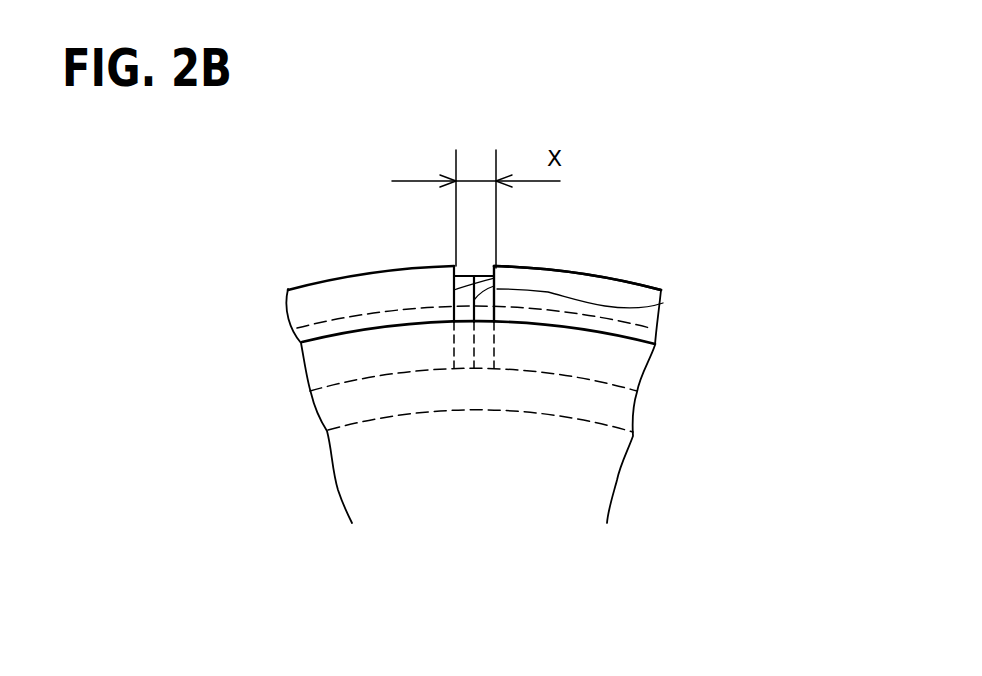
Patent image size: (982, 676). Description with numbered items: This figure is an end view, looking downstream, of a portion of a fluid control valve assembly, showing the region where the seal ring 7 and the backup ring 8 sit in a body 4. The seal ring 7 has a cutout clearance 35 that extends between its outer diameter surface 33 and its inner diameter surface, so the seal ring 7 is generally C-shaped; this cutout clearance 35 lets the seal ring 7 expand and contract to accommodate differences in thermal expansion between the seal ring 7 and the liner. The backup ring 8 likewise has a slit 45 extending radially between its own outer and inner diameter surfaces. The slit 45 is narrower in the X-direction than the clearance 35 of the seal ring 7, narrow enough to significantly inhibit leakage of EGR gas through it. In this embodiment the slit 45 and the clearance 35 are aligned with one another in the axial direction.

The base body 4 is at (348, 460).
The seal ring 7 is at (312, 283).
The backup ring 8 is at (466, 272).
The cutout clearance 35 is at (497, 264).
The outer diameter surface 33 is at (590, 270).
The slit 45 is at (663, 303).